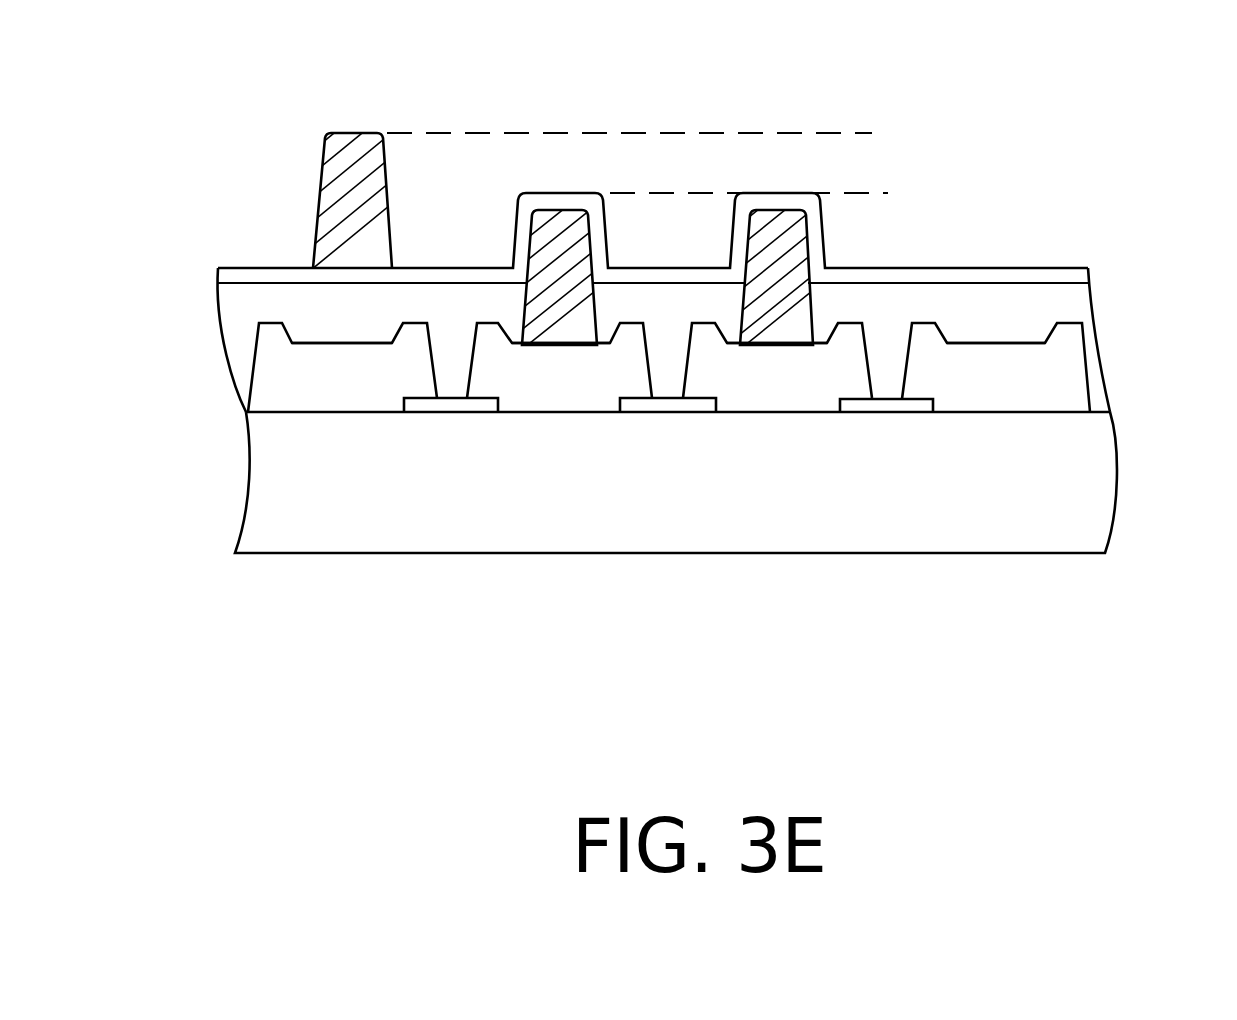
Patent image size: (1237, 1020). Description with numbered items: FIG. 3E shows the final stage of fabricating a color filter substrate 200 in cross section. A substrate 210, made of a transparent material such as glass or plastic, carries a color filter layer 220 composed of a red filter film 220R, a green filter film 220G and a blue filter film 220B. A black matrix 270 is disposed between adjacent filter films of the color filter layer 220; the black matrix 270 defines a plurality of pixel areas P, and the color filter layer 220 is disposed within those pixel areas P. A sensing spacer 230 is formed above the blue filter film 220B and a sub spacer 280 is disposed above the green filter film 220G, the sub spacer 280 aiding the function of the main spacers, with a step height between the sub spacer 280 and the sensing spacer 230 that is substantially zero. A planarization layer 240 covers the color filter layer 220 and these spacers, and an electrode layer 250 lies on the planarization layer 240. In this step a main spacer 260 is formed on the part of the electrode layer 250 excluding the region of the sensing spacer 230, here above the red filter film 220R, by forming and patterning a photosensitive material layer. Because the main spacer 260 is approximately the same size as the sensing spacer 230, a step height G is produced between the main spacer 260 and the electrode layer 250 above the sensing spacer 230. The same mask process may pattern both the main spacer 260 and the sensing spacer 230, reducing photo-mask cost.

The color filter substrate 200 is at (1200, 704).
The substrate 210 is at (260, 525).
The color filter layer 220 is at (1125, 323).
The red filter film 220R is at (305, 413).
The green filter film 220G is at (525, 402).
The blue filter film 220B is at (742, 402).
The sensing spacer 230 is at (772, 240).
The planarization layer 240 is at (1077, 278).
The electrode layer 250 is at (1077, 307).
The main spacer 260 is at (357, 147).
The black matrix 270 is at (435, 418).
The sub spacer 280 is at (563, 223).
The pixel area P is at (374, 386).
The step height G is at (762, 135).